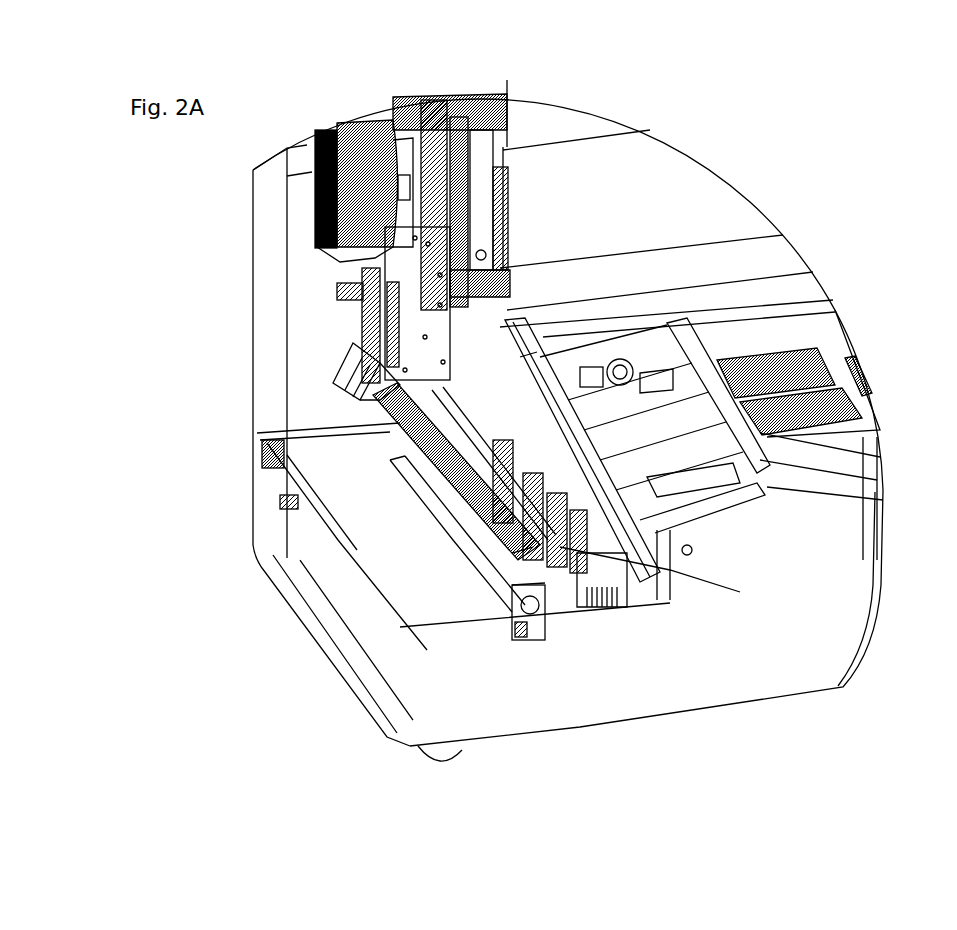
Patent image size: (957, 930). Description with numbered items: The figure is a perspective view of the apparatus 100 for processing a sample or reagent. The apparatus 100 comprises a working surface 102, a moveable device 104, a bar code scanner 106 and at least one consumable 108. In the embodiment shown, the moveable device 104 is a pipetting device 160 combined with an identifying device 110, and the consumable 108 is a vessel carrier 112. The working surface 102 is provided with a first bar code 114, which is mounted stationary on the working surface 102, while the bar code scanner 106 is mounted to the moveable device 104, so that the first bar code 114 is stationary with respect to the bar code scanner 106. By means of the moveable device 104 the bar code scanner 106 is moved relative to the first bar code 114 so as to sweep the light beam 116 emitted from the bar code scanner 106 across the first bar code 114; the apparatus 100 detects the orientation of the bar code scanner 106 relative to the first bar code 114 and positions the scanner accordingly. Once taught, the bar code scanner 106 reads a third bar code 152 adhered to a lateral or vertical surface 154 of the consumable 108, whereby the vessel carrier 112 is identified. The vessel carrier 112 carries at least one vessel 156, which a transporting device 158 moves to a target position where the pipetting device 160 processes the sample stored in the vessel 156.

The apparatus 100 is at (645, 151).
The working surface 102 is at (550, 337).
The moveable device 104 is at (330, 237).
The bar code scanner 106 is at (255, 368).
The identifying device 110 is at (333, 383).
The consumable 108 is at (459, 540).
The vessel carrier 112 is at (472, 527).
The first bar code 114 is at (545, 340).
The light beam 116 is at (400, 413).
The third bar code 152 is at (740, 598).
The lateral or vertical surface 154 is at (487, 540).
The vessel 156 is at (440, 400).
The transporting device 158 is at (533, 640).
The pipetting device 160 is at (487, 227).